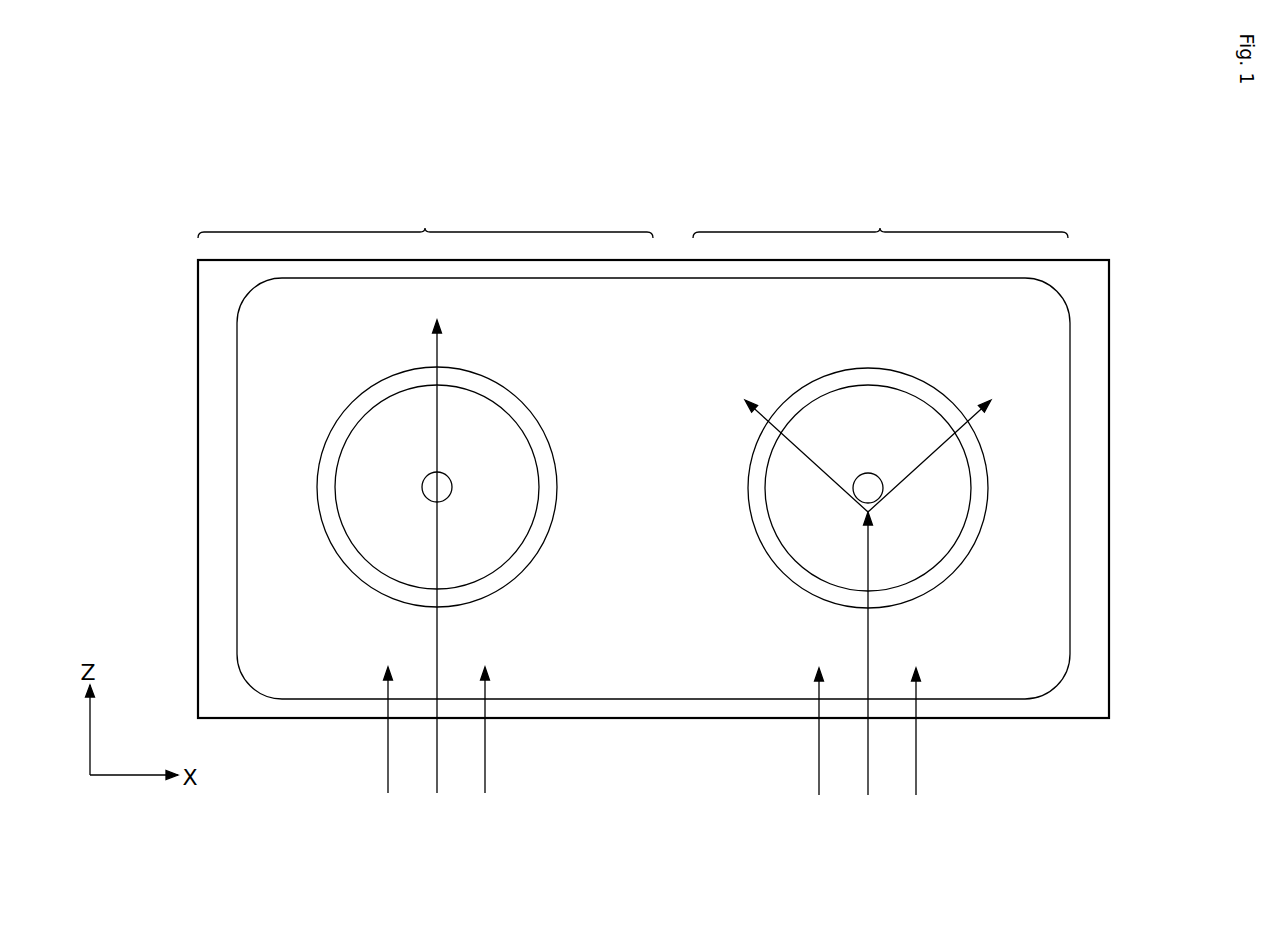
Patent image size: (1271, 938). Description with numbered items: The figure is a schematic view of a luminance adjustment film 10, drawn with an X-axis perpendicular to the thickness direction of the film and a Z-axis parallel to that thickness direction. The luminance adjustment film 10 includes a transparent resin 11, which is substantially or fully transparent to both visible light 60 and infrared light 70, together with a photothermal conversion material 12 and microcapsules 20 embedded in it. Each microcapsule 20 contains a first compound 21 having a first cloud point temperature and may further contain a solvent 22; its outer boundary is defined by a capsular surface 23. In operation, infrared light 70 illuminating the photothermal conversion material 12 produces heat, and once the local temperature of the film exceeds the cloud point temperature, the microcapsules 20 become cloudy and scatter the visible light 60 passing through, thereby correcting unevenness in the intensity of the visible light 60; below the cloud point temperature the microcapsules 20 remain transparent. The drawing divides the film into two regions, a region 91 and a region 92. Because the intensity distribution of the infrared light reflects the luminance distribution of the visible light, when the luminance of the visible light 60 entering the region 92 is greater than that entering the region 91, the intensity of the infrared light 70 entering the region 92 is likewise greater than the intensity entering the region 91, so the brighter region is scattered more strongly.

The luminance adjustment film 10 is at (1052, 185).
The transparent resin 11 is at (1093, 659).
The photothermal conversion material 12 is at (1045, 575).
The microcapsule 20 is at (643, 489).
The first compound 21 is at (452, 487).
The solvent 22 is at (498, 547).
The capsular surface 23 is at (538, 418).
The visible light 60 is at (437, 778).
The infrared light 70 is at (388, 780).
The region 91 is at (425, 220).
The region 92 is at (880, 220).